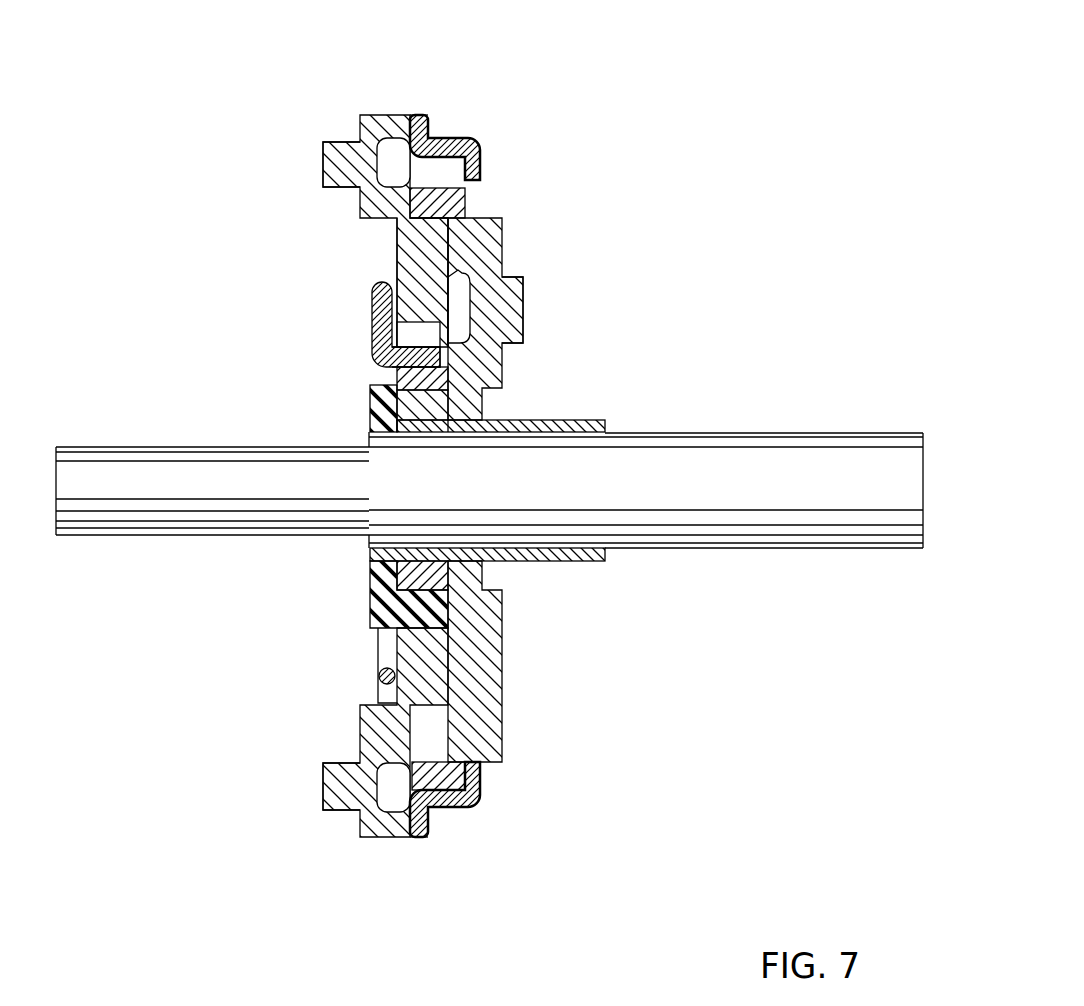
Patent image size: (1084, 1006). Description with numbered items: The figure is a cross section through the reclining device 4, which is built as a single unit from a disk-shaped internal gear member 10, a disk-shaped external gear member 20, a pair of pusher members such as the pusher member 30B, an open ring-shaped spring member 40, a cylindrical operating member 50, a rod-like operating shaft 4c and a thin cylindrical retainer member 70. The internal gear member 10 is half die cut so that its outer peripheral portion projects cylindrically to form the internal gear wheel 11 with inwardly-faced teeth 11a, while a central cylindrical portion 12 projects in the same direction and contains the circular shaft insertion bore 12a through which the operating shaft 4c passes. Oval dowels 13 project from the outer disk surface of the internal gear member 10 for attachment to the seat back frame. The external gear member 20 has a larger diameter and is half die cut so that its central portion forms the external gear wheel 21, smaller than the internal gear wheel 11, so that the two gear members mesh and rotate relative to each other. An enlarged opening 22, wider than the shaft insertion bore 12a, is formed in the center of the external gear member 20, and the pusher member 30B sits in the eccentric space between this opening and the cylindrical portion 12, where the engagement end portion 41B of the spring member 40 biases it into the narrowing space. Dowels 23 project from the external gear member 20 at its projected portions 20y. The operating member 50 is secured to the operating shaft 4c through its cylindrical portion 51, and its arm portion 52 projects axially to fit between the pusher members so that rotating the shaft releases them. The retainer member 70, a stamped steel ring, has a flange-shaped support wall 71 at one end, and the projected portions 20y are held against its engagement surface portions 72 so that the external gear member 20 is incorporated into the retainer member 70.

The reclining device 4 is at (673, 69).
The operating shaft 4c is at (190, 474).
The internal gear member 10 is at (492, 250).
The internal gear wheel 11 is at (442, 205).
The inwardly-faced teeth 11a is at (437, 204).
The cylindrical portion 12 is at (428, 407).
The shaft insertion bore 12a is at (450, 434).
The dowels 13 is at (513, 300).
The external gear member 20 is at (357, 206).
The external gear wheel 21 is at (416, 259).
The enlarged opening 22 is at (418, 327).
The dowels 23 is at (332, 166).
The projected portions 20y is at (378, 113).
The pusher member 30B is at (438, 377).
The spring member 40 is at (373, 298).
The engagement end portion 41B is at (409, 360).
The operating member 50 is at (376, 418).
The cylindrical portion 51 is at (571, 429).
The arm portion 52 is at (433, 607).
The retainer member 70 is at (479, 141).
The support wall 71 is at (474, 169).
The engagement surface portions 72 is at (418, 134).